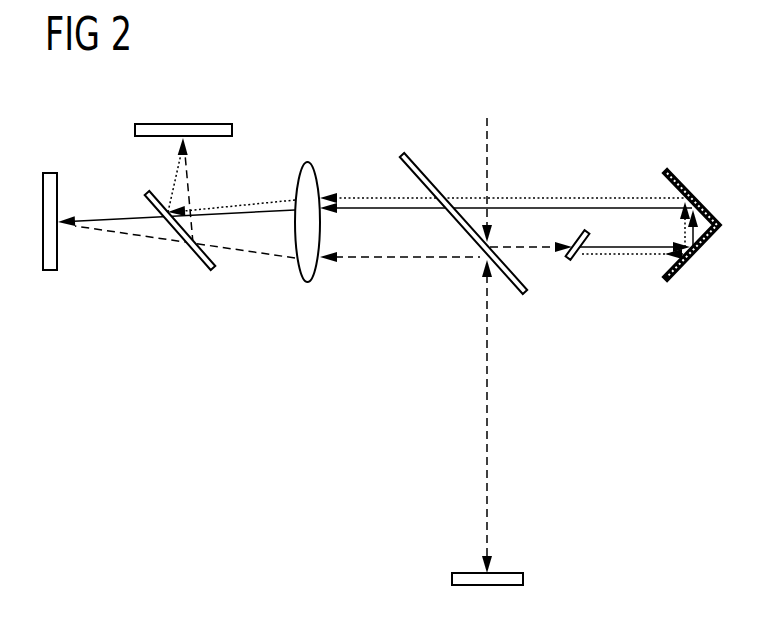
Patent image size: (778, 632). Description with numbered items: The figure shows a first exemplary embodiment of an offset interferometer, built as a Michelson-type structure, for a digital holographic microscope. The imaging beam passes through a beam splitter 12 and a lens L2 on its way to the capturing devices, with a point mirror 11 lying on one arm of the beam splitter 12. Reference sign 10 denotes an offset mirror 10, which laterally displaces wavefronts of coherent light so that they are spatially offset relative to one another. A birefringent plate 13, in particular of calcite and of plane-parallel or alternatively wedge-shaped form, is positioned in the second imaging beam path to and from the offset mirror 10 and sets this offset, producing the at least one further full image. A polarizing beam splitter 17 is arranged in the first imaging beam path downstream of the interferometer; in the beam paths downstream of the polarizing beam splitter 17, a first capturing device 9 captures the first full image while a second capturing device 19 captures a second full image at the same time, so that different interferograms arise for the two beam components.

The capturing device 9 is at (54, 173).
The offset mirror 10 is at (683, 183).
The point mirror 11 is at (510, 573).
The beam splitter 12 is at (523, 297).
The birefringent plate 13 is at (577, 262).
The polarizing beam splitter 17 is at (203, 262).
The second capturing device 19 is at (183, 124).
The lens L2 is at (307, 162).